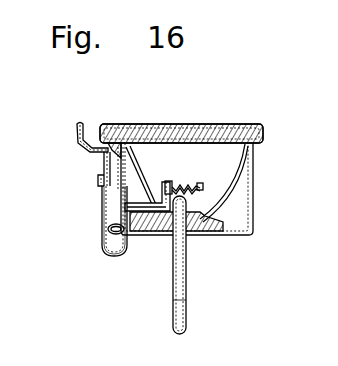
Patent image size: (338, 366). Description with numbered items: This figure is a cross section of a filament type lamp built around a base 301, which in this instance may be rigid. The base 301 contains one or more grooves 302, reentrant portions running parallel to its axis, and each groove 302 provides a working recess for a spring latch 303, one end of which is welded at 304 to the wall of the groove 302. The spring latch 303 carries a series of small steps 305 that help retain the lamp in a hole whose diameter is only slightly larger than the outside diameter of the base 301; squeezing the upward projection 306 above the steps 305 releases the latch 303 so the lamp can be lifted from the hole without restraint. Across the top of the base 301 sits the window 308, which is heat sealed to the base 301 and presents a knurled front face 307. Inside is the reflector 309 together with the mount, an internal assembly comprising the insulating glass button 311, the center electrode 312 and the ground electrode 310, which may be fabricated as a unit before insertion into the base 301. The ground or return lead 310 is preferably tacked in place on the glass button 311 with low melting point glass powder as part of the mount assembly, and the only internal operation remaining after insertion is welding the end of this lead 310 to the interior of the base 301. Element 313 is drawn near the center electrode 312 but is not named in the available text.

The base 301 is at (253, 212).
The groove 302 is at (117, 166).
The spring latch 303 is at (101, 201).
The weld 304 is at (108, 230).
The small steps 305 is at (102, 181).
The upward projection 306 is at (76, 127).
The knurled front face 307 is at (137, 123).
The window 308 is at (213, 111).
The reflector 309 is at (234, 184).
The ground electrode 310 is at (148, 194).
The glass button 311 is at (159, 240).
The center electrode 312 is at (188, 250).
The clip 313 is at (189, 185).